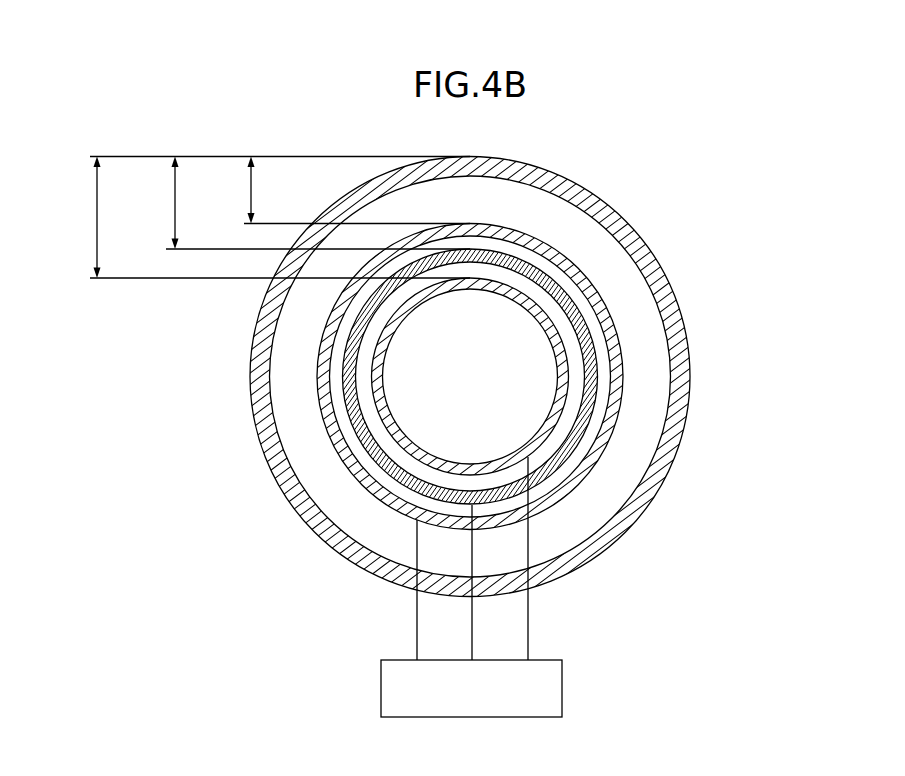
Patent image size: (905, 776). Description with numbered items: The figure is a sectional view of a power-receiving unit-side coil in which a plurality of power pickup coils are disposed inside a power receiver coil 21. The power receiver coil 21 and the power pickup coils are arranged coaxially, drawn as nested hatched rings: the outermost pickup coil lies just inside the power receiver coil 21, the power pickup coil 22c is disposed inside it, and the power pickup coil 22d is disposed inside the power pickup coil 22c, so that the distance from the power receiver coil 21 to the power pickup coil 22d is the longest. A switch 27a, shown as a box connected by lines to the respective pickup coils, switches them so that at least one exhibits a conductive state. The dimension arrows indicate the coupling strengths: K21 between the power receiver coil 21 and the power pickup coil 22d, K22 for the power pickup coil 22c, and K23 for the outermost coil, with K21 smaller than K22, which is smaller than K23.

The power receiver coil 21 is at (591, 191).
The power pickup coil 22d is at (533, 300).
The power pickup coil 22c is at (593, 333).
The switch 27a is at (562, 690).
The coupling strength K21 is at (266, 218).
The coupling strength K22 is at (304, 203).
The coupling strength K23 is at (342, 190).